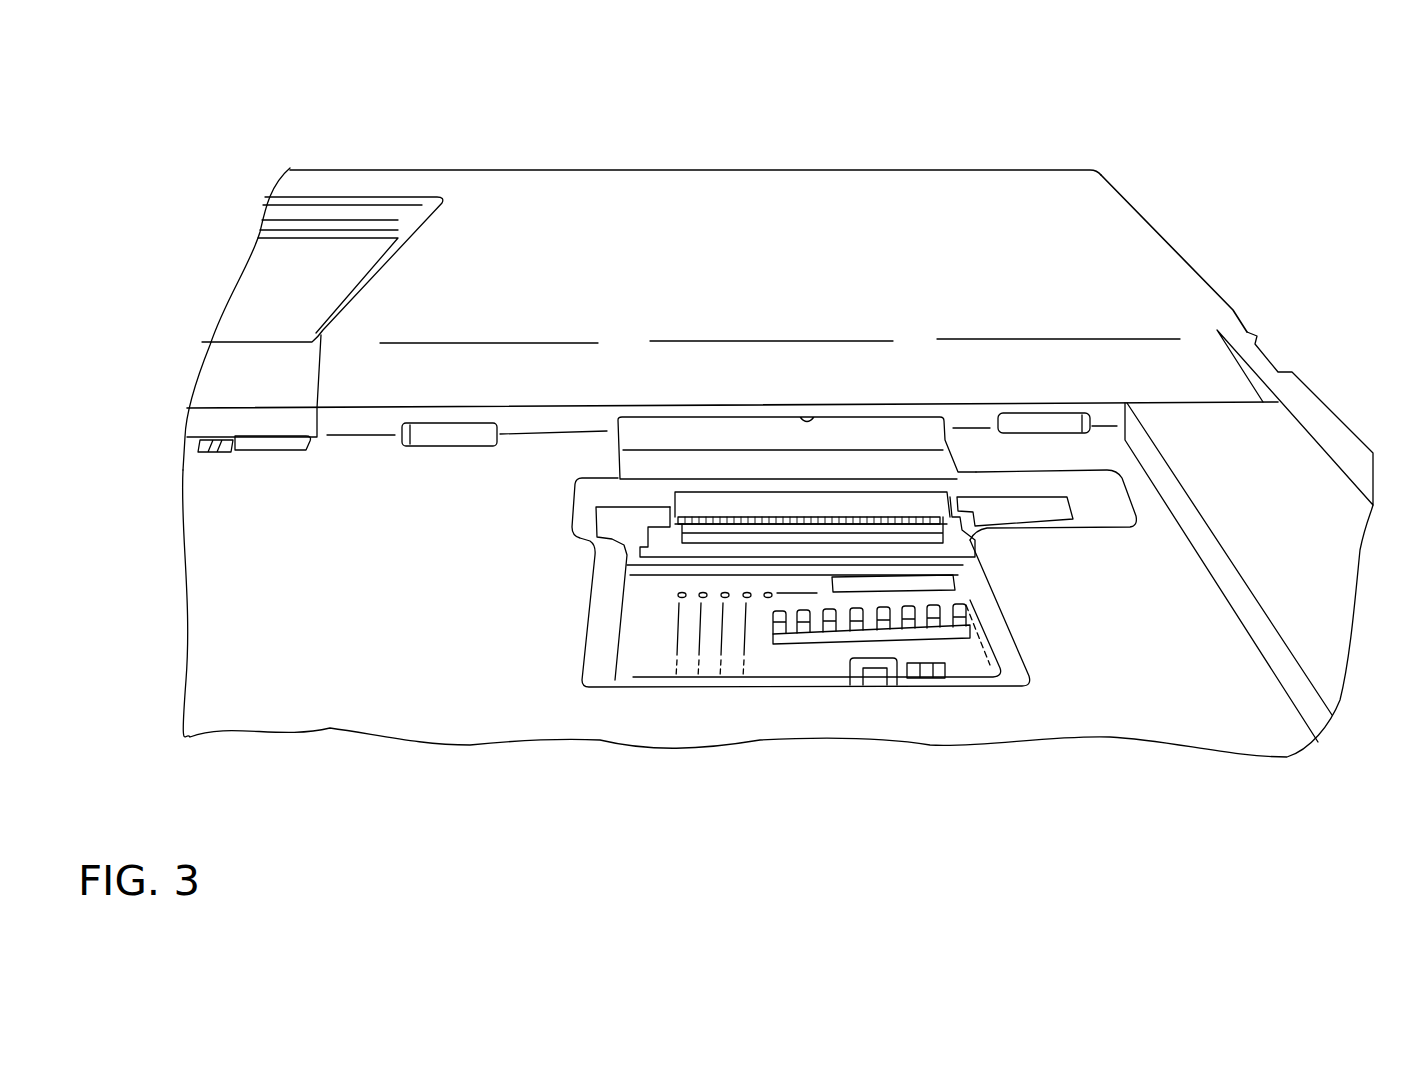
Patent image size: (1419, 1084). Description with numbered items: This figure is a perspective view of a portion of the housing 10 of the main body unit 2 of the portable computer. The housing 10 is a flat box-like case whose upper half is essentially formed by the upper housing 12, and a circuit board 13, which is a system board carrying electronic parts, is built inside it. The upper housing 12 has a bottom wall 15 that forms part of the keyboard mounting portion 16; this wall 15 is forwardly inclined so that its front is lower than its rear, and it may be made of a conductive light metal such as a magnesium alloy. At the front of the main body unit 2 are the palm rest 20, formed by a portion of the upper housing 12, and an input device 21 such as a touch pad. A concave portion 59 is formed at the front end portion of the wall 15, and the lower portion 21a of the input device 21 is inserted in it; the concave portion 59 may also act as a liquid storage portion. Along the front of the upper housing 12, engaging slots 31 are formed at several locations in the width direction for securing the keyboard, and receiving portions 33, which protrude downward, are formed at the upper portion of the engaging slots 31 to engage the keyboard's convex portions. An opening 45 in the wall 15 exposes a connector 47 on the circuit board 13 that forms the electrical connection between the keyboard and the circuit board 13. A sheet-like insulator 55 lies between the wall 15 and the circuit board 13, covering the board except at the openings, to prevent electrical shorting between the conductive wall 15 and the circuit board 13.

The main body unit 2 is at (1310, 327).
The housing 10 is at (993, 169).
The upper housing 12 is at (1163, 232).
The circuit board 13 is at (780, 660).
The bottom wall 15 is at (452, 683).
The keyboard mounting portion 16 is at (1120, 630).
The palm rest 20 is at (690, 225).
The input device 21 is at (265, 290).
The lower portion of input device 21a is at (280, 452).
The engaging slots 31 is at (432, 447).
The receiving portions 33 is at (460, 422).
The opening 45 is at (653, 670).
The connector 47 is at (715, 523).
The insulator 55 is at (598, 663).
The concave portion 59 is at (220, 455).